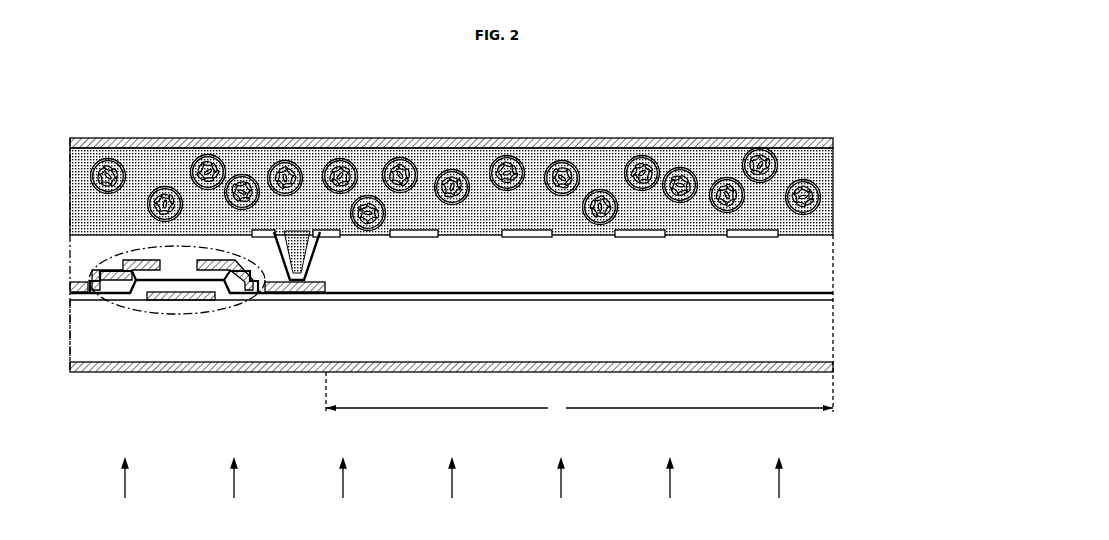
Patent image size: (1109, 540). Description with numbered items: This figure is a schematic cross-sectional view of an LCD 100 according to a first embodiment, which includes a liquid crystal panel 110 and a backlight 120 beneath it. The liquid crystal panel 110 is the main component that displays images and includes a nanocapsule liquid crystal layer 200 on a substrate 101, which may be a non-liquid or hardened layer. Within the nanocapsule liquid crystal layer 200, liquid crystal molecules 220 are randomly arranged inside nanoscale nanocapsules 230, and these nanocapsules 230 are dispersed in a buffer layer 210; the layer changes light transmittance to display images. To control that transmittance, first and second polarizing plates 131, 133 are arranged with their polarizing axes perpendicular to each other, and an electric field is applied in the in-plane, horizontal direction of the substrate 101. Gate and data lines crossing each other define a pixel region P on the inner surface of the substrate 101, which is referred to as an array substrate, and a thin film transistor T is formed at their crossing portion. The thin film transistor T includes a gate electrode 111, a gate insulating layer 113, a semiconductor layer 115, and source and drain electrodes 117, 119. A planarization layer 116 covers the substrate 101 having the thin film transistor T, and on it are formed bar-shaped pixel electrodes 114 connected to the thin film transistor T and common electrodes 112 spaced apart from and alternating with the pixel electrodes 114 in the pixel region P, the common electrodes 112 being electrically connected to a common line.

The LCD 100 is at (804, 100).
The liquid crystal panel 110 is at (862, 133).
The second polarizing plate 133 is at (835, 143).
The nanocapsule liquid crystal layer 200 is at (896, 188).
The buffer layer 210 is at (833, 212).
The liquid crystal molecules 220 is at (821, 184).
The nanocapsule 230 is at (819, 197).
The common electrodes 112 is at (399, 238).
The pixel electrodes 114 is at (330, 237).
The planarization layer 116 is at (487, 284).
The gate insulating layer 113 is at (355, 301).
The thin film transistor T is at (140, 315).
The gate electrode 111 is at (183, 302).
The semiconductor layer 115 is at (233, 285).
The source electrode 117 is at (118, 265).
The drain electrode 119 is at (240, 263).
The substrate 101 is at (822, 356).
The first polarizing plate 131 is at (830, 367).
The pixel region P is at (579, 394).
The backlight 120 is at (452, 496).